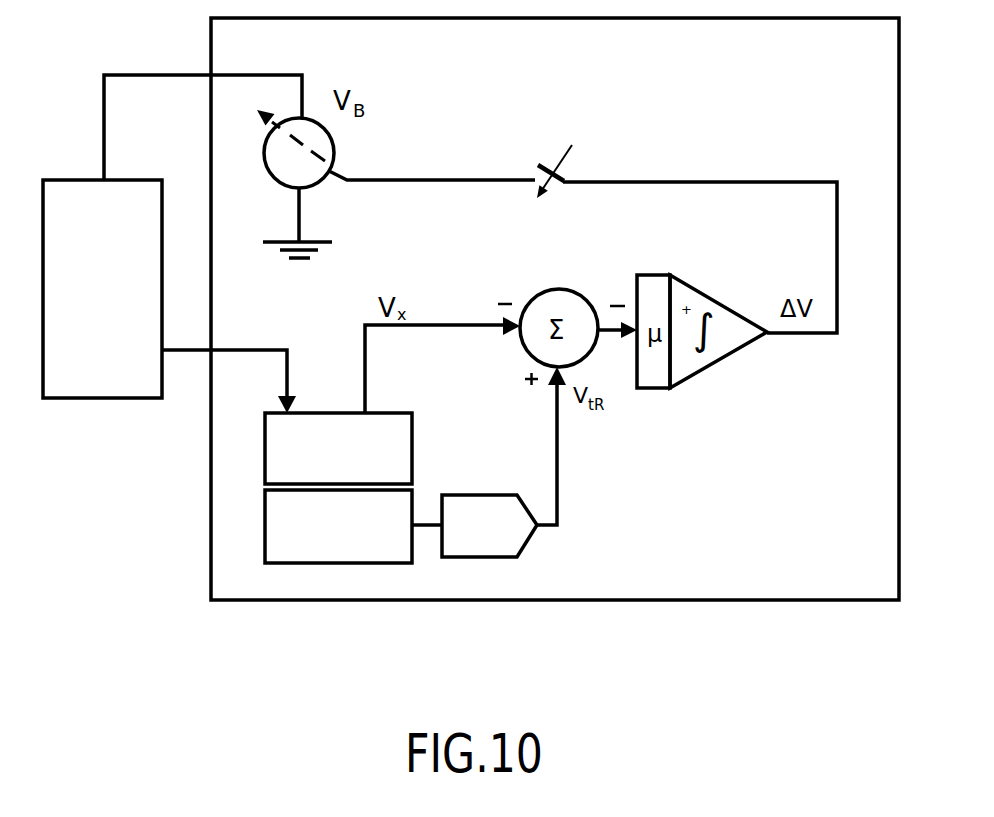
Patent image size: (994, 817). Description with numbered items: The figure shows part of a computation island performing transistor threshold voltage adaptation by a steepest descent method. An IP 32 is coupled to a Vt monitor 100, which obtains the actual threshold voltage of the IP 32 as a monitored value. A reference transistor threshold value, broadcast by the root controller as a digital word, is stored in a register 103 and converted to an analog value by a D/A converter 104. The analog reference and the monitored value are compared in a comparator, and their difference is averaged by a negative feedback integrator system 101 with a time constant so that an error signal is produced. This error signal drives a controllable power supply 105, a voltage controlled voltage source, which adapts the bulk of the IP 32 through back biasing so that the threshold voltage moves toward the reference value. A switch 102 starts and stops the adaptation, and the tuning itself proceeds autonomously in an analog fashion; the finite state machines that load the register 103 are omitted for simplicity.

The negative feedback integrator system 101 is at (731, 140).
The IP 32 is at (80, 378).
The Vt monitor 100 is at (280, 450).
The switch 102 is at (566, 184).
The register 103 is at (318, 555).
The D/A converter 104 is at (525, 548).
The controllable power supply 105 is at (432, 158).